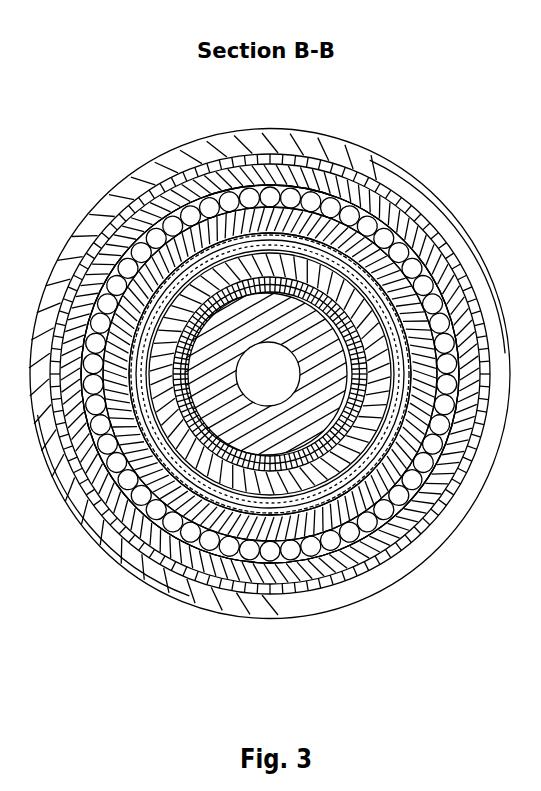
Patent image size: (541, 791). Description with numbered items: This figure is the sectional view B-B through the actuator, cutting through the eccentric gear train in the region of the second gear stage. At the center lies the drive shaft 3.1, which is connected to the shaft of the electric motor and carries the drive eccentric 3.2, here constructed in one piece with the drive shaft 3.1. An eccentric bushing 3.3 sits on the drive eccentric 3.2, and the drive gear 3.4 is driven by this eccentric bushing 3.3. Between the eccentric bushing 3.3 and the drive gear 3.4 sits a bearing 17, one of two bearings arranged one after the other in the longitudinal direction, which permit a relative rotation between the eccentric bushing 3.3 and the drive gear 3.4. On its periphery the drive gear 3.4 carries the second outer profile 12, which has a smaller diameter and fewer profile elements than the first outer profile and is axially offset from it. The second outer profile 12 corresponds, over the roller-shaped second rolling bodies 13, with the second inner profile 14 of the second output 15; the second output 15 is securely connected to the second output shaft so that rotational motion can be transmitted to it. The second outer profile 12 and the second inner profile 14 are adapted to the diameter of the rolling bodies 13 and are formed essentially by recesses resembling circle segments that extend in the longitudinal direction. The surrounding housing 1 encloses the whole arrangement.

The outer sheath 1 is at (122, 188).
The second rolling bodies 13 is at (122, 268).
The second output 15 is at (317, 562).
The second inner profile 14 is at (443, 375).
The second outer profile 12 is at (402, 458).
The bearing 17 is at (158, 460).
The drive shaft 3.1 is at (262, 438).
The drive eccentric 3.2 is at (208, 428).
The eccentric bushing 3.3 is at (280, 478).
The drive gear 3.4 is at (345, 490).